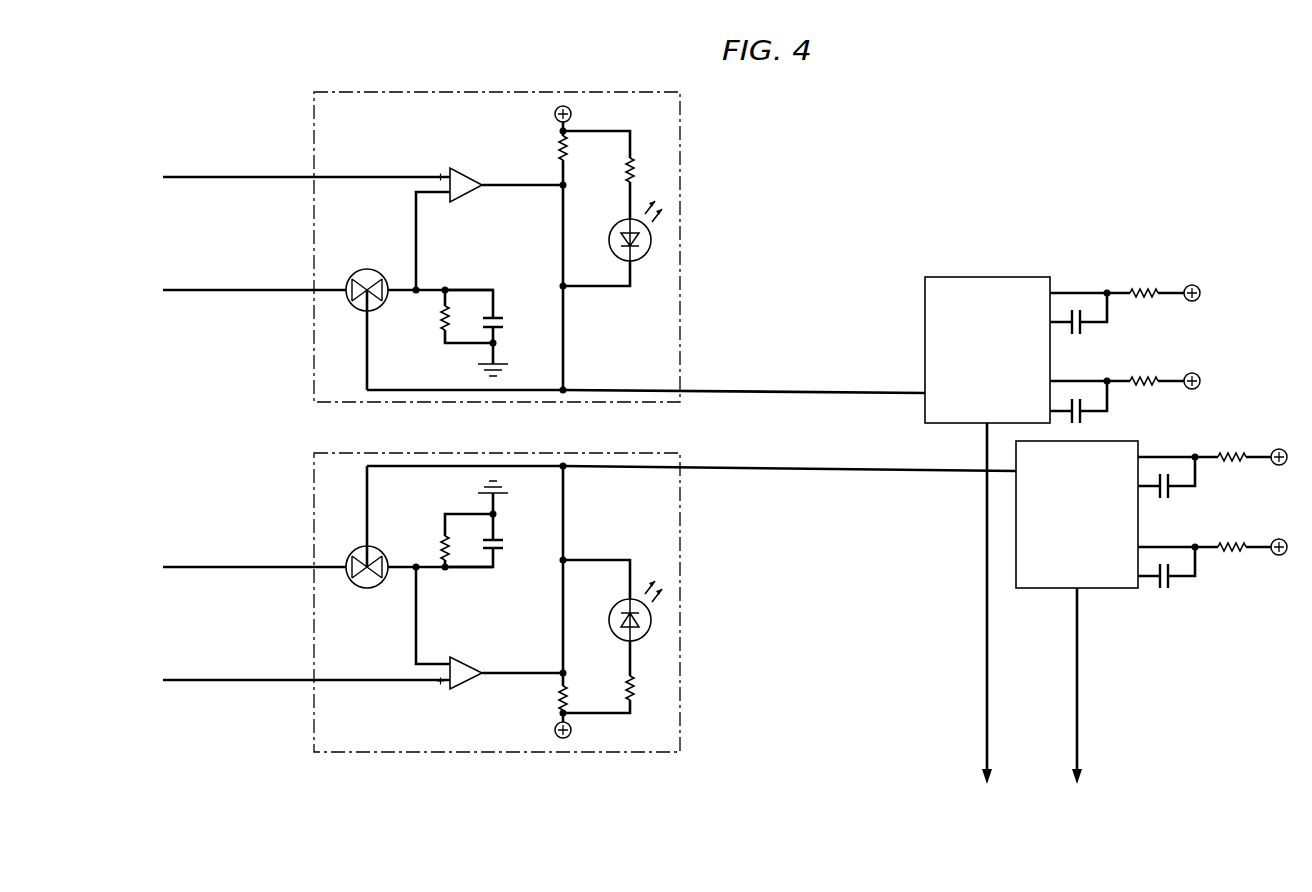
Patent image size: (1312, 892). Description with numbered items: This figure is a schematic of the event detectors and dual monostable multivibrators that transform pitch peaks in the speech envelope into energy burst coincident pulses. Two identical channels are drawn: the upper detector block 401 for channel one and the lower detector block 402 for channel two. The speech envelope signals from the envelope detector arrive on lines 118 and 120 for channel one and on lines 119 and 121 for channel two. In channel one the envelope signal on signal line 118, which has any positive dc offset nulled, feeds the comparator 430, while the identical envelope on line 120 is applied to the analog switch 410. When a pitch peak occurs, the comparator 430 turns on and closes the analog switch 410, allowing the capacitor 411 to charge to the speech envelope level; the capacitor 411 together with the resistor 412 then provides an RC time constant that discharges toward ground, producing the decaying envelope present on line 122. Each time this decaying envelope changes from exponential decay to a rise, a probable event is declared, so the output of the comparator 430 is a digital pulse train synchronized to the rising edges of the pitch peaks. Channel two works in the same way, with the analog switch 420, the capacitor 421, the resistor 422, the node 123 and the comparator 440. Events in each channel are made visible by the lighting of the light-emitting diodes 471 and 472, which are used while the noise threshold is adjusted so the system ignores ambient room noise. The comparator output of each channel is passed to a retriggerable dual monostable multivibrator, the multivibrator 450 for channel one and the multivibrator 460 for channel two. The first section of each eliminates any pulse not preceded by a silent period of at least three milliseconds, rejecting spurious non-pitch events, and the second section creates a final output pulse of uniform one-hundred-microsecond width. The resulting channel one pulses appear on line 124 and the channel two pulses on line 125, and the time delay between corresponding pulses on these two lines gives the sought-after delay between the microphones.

The first detector circuit block 401 is at (343, 92).
The second detector circuit block 402 is at (343, 452).
The signal line 118 is at (205, 175).
The line 120 is at (205, 288).
The line 121 is at (205, 565).
The line 119 is at (205, 677).
The analog switch 410 is at (359, 319).
The analog switch 420 is at (358, 535).
The capacitor 411 is at (490, 333).
The resistor 412 is at (454, 316).
The capacitor 421 is at (492, 524).
The resistor 422 is at (452, 540).
The line 122 is at (467, 289).
The node 123 is at (461, 570).
The comparator 430 is at (500, 177).
The comparator 440 is at (500, 665).
The light-emitting diode 471 is at (612, 234).
The light-emitting diode 472 is at (612, 618).
The dual monostable multivibrator 450 is at (957, 277).
The dual monostable multivibrator 460 is at (1103, 590).
The line 124 is at (985, 691).
The line 125 is at (1072, 691).